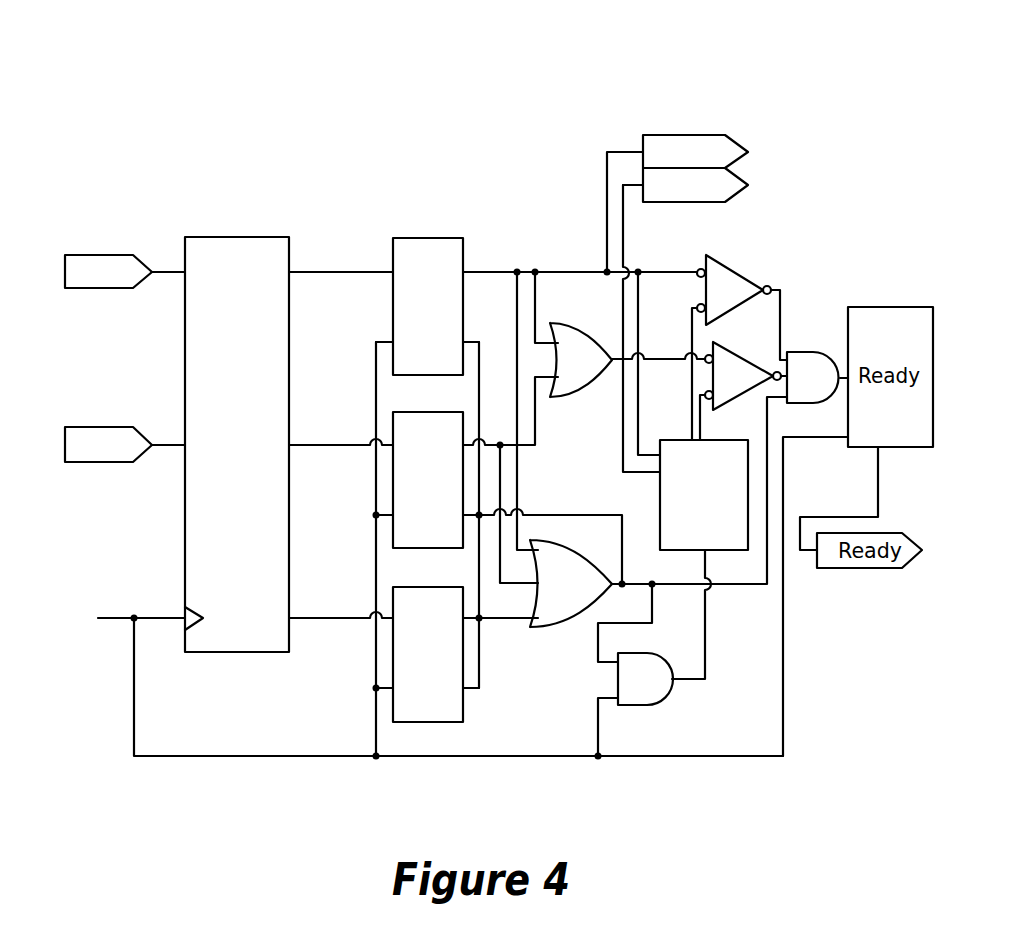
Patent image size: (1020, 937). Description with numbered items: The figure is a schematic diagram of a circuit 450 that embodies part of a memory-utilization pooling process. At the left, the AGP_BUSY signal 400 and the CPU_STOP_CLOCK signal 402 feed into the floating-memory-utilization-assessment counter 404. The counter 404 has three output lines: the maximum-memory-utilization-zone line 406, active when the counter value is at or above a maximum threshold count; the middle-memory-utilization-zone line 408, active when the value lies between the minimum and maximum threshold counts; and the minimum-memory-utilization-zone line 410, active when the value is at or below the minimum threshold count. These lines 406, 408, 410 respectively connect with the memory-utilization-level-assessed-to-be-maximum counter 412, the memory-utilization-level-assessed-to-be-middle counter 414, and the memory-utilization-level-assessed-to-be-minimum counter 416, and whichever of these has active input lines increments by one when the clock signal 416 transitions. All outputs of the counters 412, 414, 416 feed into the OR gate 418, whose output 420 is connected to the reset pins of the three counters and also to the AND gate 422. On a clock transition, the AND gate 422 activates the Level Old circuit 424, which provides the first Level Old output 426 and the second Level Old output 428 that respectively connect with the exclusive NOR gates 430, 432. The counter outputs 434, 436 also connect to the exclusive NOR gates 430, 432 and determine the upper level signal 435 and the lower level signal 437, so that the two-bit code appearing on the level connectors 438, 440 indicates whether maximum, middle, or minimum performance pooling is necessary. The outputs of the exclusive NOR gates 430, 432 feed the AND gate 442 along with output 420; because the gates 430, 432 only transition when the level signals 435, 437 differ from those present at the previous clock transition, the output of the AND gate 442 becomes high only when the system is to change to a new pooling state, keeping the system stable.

The AGP_BUSY signal 400 is at (124, 212).
The CPU_STOP_CLOCK signal 402 is at (119, 389).
The floating-memory-utilization-assessment counter 404 is at (235, 237).
The memory-utilization-state-counter-value-in-maximum-memory-utilization-zone line 406 is at (332, 274).
The memory-utilization-state-counter-value-in-middle-memory-utilization-zone line 408 is at (325, 447).
The memory-utilization-state-counter-value-in-minimum-memory-utilization-zone line 410 is at (343, 620).
The memory-utilization-level-assessed-to-be-maximum counter 412 is at (428, 238).
The memory-utilization-level-assessed-to-be-middle counter 414 is at (460, 550).
The memory-utilization-level-assessed-to-be-minimum counter 416 is at (468, 705).
The OR gate 418 is at (569, 603).
The output of OR gate 420 is at (667, 586).
The AND gate 422 is at (650, 706).
The Level Old (1:0) circuit 424 is at (745, 551).
The Level_Old_Output 1 (LO(1)) 426 is at (690, 322).
The Level_Old_Output 0 (LO(0)) 428 is at (697, 408).
The exclusive NOR gate 430 is at (742, 262).
The exclusive NOR gate 432 is at (760, 352).
The output of memory-utilization-level counter 434 is at (533, 275).
The Level(1) signal 435 is at (527, 242).
The output of memory-utilization-level counter 436 is at (604, 340).
The Level(0) signal 437 is at (611, 440).
The L(1) connector 438 is at (675, 135).
The L(0) connector 440 is at (742, 172).
The AND gate 442 is at (806, 352).
The circuit 450 is at (460, 108).